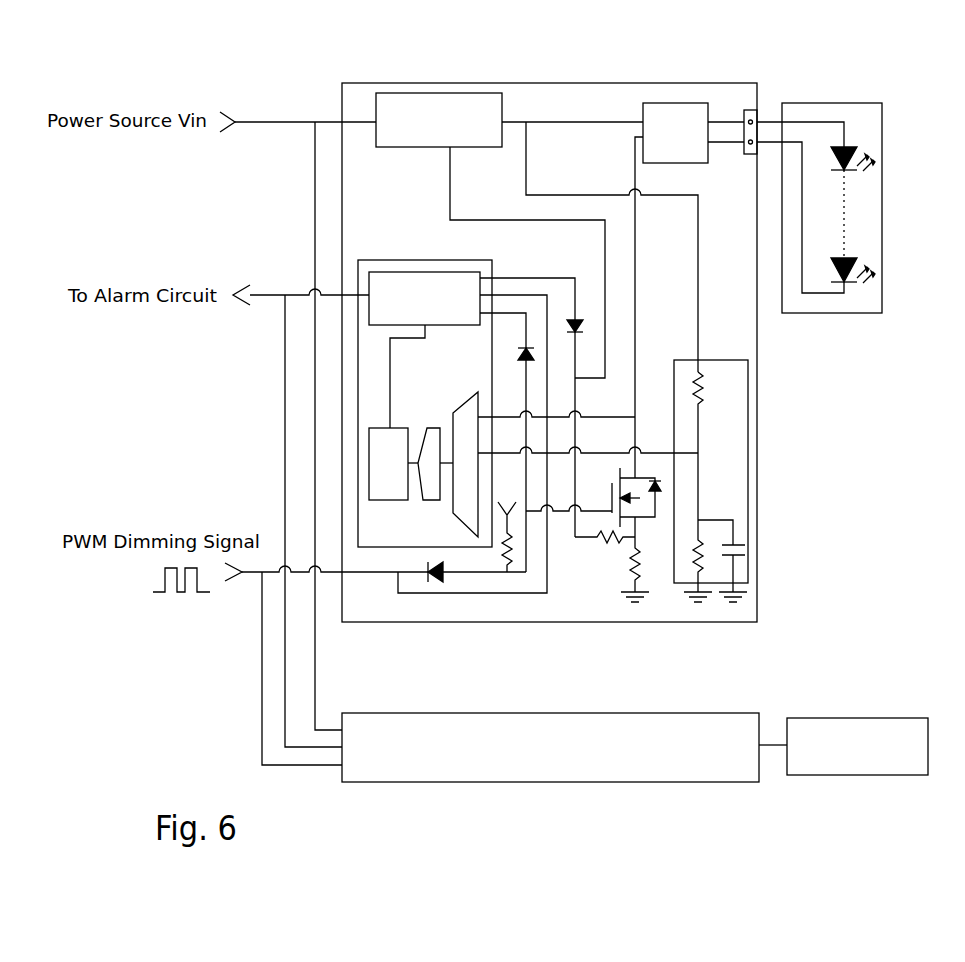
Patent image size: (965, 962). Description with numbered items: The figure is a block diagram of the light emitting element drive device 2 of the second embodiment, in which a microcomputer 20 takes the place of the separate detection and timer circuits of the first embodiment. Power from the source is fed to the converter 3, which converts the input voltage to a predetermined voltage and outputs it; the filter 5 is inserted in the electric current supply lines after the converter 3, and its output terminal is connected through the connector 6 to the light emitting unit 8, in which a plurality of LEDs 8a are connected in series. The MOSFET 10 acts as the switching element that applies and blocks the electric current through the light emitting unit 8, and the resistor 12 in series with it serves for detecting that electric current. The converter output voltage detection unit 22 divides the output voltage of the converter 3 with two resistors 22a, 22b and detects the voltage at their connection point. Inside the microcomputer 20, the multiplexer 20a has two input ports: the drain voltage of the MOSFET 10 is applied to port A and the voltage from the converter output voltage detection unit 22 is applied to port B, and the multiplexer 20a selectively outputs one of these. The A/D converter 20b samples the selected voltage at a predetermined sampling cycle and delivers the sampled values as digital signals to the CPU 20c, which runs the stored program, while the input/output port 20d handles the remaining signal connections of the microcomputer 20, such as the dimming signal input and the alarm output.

The light emitting element drive device 2 is at (537, 83).
The converter 3 is at (430, 93).
The filter 5 is at (665, 103).
The connector 6 is at (748, 110).
The light emitting unit 8 is at (832, 103).
The LED 8a is at (850, 150).
The MOSFET 10 is at (630, 517).
The resistor 12 is at (622, 560).
The microcomputer 20 is at (392, 547).
The multiplexer 20a is at (467, 530).
The A/D converter 20b is at (428, 500).
The CPU 20c is at (369, 463).
The input/output port 20d is at (403, 272).
The converter output voltage detection unit 22 is at (748, 490).
The resistor 22a is at (703, 390).
The resistor 22b is at (703, 557).